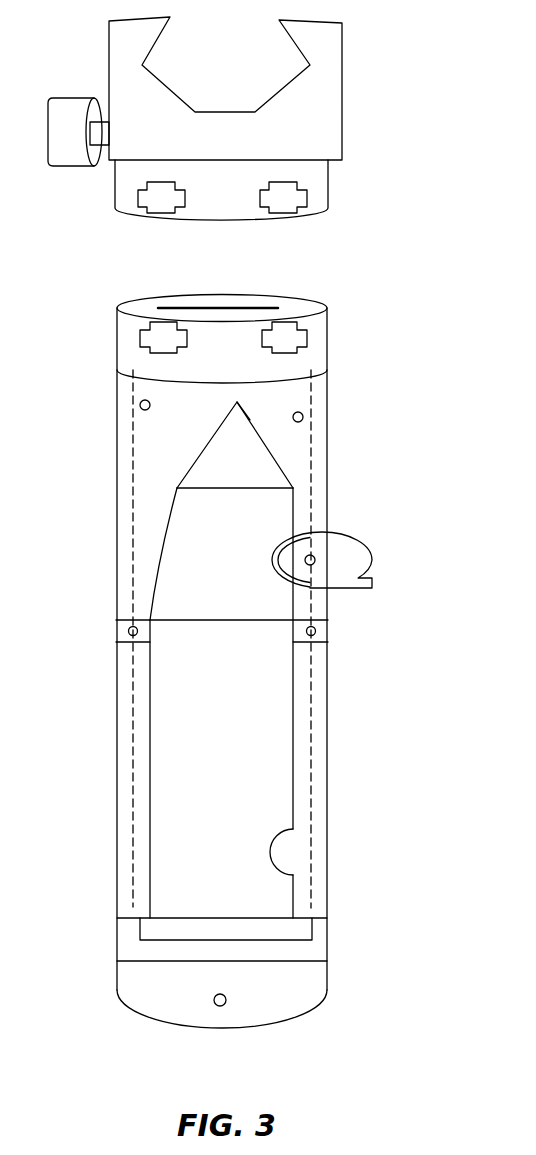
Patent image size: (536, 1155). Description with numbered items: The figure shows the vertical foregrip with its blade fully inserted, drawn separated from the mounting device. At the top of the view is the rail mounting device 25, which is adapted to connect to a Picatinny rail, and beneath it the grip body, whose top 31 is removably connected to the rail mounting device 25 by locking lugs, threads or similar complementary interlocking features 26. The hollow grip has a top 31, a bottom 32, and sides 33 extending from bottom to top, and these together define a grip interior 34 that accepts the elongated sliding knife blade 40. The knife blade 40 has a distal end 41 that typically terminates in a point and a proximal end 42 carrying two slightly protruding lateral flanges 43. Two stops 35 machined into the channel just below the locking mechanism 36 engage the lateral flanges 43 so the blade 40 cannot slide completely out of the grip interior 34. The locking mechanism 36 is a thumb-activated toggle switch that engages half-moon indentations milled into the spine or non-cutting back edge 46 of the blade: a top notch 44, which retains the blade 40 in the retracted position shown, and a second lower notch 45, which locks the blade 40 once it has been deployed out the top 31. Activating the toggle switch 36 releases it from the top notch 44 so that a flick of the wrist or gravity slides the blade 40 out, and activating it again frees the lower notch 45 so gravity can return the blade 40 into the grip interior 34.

The rail mounting device 25 is at (343, 133).
The interlocking features 26 is at (280, 333).
The top 31 is at (307, 308).
The bottom 32 is at (260, 1028).
The sides 33 is at (330, 795).
The grip interior 34 is at (187, 457).
The stops 35 is at (120, 631).
The locking mechanism 36 is at (348, 548).
The knife blade 40 is at (236, 696).
The distal end 41 is at (242, 407).
The proximal end 42 is at (220, 928).
The lateral flanges 43 is at (140, 932).
The top notch 44 is at (273, 560).
The lower notch 45 is at (280, 837).
The spine 46 is at (295, 753).